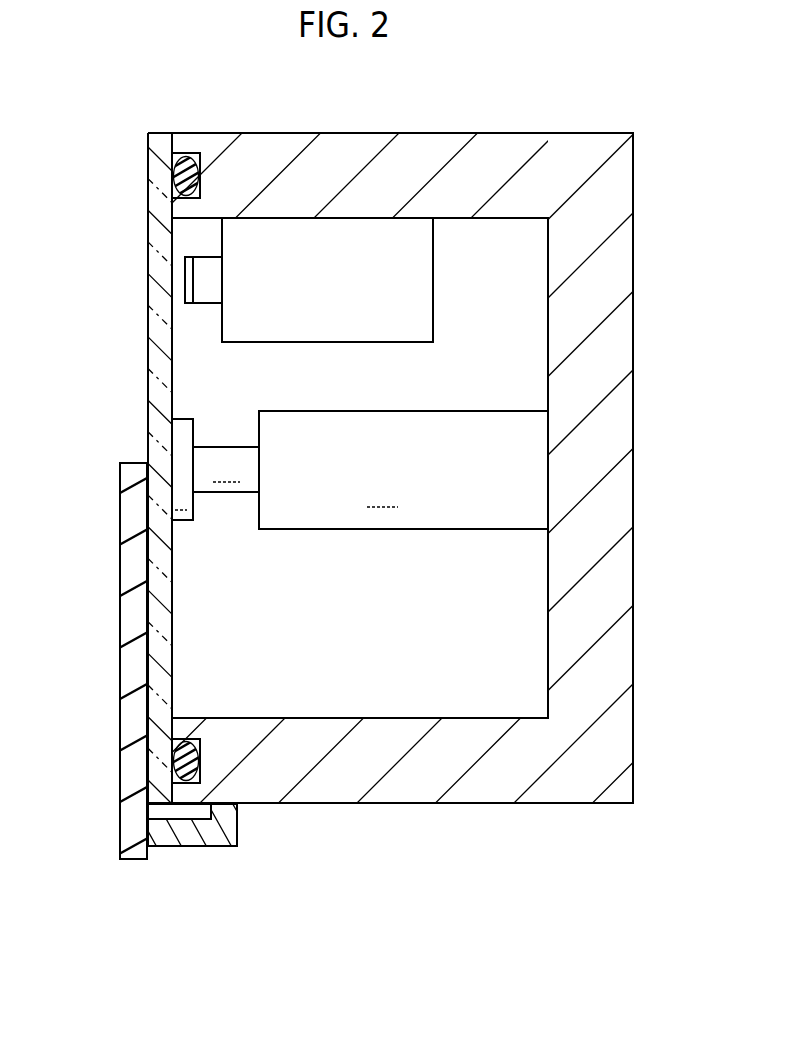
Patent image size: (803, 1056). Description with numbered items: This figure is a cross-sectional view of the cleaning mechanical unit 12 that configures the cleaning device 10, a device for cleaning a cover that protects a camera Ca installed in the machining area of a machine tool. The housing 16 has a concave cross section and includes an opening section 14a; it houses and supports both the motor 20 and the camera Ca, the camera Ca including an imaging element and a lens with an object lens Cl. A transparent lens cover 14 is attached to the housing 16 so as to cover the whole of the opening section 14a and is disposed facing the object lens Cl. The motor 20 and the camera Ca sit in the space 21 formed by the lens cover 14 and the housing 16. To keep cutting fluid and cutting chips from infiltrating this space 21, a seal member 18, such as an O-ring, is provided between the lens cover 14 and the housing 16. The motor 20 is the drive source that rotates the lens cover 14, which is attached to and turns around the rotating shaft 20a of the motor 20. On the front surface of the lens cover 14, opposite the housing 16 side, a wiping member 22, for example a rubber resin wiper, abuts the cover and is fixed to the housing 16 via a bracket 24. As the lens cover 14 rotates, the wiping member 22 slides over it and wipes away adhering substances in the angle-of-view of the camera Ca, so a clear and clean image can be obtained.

The cleaning device 10 is at (228, 68).
The cleaning mechanical unit 12 is at (506, 127).
The lens cover 14 is at (148, 224).
The opening section 14a is at (202, 612).
The housing 16 is at (613, 585).
The seal member 18 is at (178, 152).
The motor 20 is at (312, 508).
The rotating shaft 20a is at (209, 445).
The space 21 is at (500, 375).
The wiping member 22 is at (133, 667).
The bracket 24 is at (185, 838).
The camera Ca is at (320, 313).
The object lens Cl is at (187, 275).